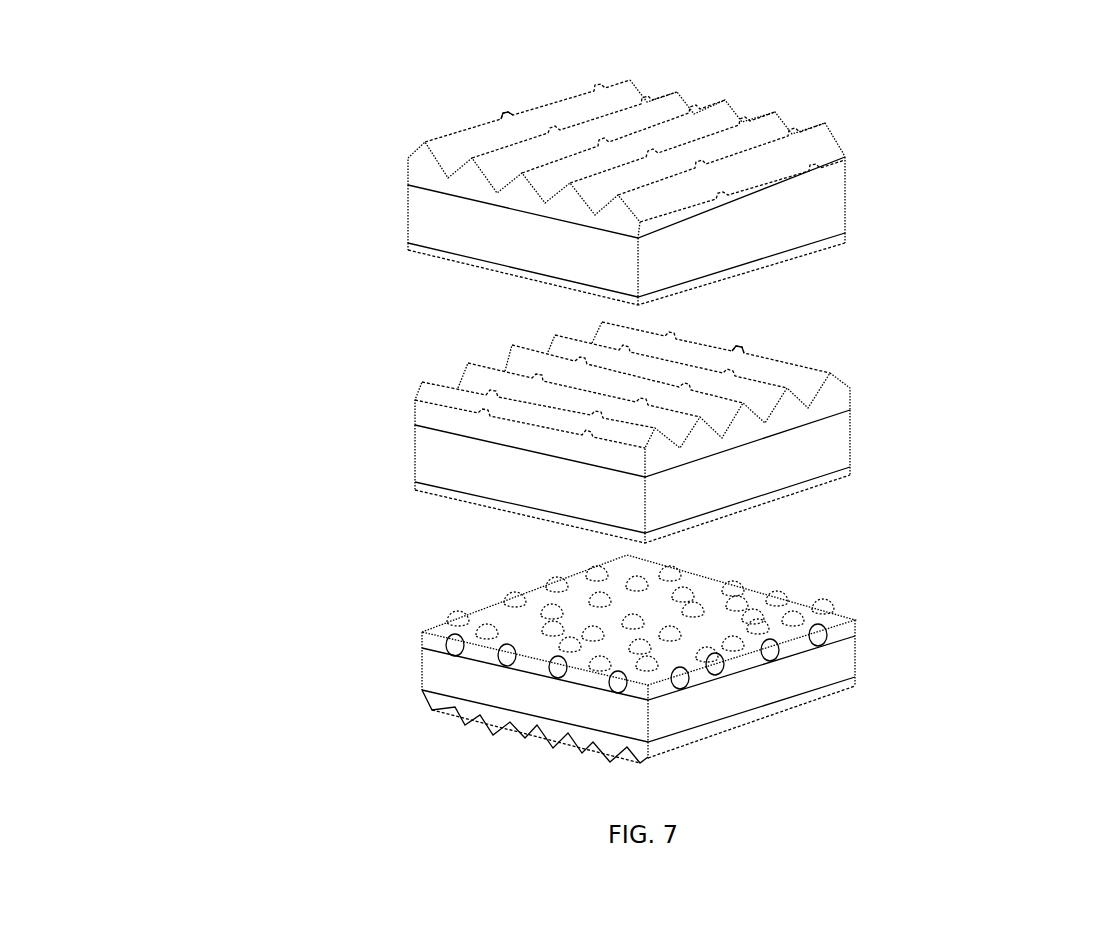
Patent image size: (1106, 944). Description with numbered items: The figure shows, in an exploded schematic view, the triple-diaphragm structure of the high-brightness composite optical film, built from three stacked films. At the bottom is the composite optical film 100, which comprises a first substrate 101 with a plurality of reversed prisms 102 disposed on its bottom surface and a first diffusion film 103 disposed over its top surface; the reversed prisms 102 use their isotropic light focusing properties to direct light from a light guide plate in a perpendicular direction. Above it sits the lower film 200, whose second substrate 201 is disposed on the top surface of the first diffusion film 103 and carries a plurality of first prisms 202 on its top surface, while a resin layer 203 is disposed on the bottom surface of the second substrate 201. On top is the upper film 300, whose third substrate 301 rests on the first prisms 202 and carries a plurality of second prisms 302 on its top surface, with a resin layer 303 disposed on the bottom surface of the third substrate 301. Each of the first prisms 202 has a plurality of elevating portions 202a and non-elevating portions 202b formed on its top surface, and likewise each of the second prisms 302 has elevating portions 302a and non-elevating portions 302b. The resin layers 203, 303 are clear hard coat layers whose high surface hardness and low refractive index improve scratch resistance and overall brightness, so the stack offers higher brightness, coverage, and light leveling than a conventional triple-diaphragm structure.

The composite optical film 100 is at (910, 613).
The first substrate 101 is at (638, 690).
The reversed prisms 102 is at (428, 715).
The first diffusion film 103 is at (512, 618).
The lower film 200 is at (883, 416).
The second substrate 201 is at (632, 471).
The first prisms 202 is at (428, 385).
The elevating portions 202a is at (747, 348).
The non-elevating portions 202b is at (690, 340).
The resin layer 203 is at (448, 495).
The upper film 300 is at (867, 192).
The third substrate 301 is at (626, 227).
The second prisms 302 is at (463, 135).
The elevating portions 302a is at (508, 113).
The non-elevating portions 302b is at (563, 103).
The resin layer 303 is at (448, 258).